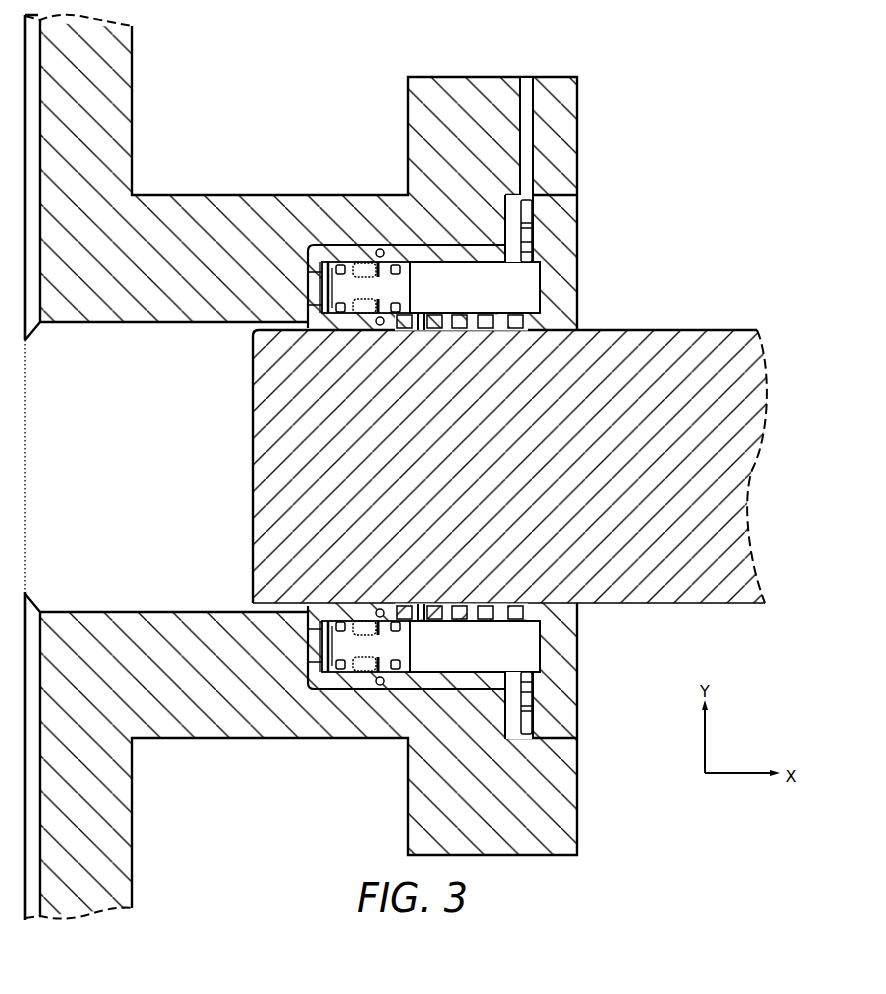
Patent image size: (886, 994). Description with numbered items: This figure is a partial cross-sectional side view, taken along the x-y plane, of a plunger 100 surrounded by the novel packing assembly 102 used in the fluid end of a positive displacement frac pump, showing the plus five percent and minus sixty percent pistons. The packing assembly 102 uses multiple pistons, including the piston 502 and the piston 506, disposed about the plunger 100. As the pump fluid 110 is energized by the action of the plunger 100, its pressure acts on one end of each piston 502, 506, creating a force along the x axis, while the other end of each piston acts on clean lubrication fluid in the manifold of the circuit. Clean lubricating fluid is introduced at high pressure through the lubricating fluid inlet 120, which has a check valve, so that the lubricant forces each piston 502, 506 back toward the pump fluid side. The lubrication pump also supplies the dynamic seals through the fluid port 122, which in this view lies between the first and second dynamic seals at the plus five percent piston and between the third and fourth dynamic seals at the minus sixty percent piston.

The plunger 100 is at (680, 476).
The packing assembly 102 is at (667, 194).
The pump fluid 110 is at (156, 496).
The lubricating fluid inlet 120 is at (525, 196).
The fluid port 122 is at (473, 600).
The piston 502 is at (338, 292).
The piston 506 is at (353, 643).